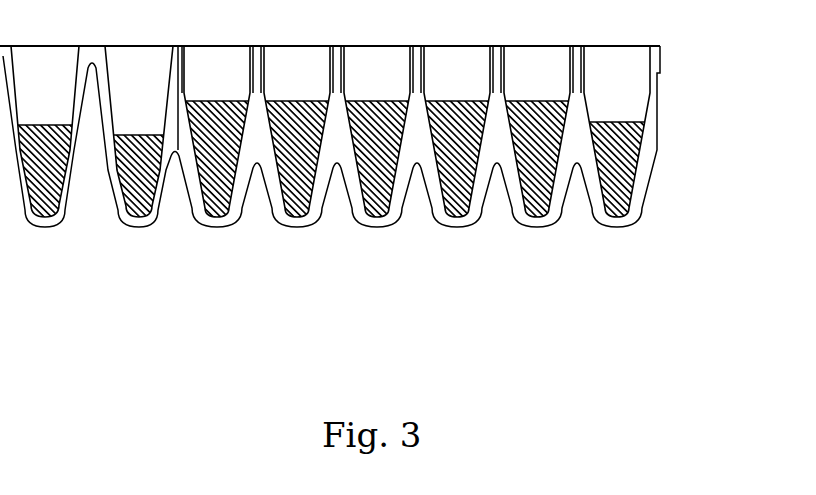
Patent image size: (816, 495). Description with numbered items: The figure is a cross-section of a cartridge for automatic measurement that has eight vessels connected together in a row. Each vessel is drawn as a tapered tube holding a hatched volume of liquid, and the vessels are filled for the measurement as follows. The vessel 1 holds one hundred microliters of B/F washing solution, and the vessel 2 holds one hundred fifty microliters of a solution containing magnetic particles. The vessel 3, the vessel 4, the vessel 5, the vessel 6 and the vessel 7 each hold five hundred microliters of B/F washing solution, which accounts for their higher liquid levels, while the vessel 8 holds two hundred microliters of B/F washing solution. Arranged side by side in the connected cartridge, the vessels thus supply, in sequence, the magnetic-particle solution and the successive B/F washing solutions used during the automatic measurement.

The vessel 1 is at (43, 236).
The vessel 2 is at (135, 236).
The vessel 3 is at (215, 236).
The vessel 4 is at (295, 236).
The vessel 5 is at (375, 236).
The vessel 6 is at (455, 236).
The vessel 7 is at (535, 236).
The vessel 8 is at (615, 236).